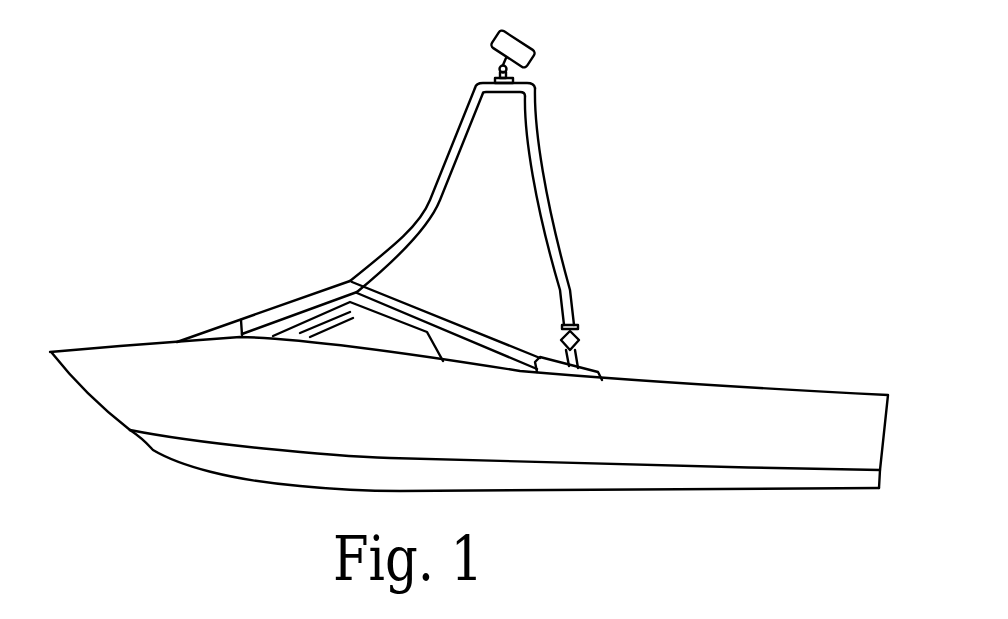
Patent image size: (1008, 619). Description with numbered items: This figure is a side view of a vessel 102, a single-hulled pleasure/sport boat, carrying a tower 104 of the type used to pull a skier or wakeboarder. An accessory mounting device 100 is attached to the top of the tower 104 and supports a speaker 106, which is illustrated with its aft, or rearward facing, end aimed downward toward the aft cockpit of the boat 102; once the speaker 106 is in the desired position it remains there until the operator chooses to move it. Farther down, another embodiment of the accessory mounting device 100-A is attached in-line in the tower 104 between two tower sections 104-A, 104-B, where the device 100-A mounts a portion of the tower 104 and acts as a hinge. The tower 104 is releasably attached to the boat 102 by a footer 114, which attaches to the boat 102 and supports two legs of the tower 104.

The accessory mounting device 100 is at (521, 56).
The accessory mounting device 100-A is at (581, 341).
The vessel 102 is at (152, 449).
The tower 104 is at (452, 231).
The tower section 104-A is at (556, 244).
The tower section 104-B is at (578, 355).
The speaker 106 is at (536, 58).
The footer 114 is at (562, 362).